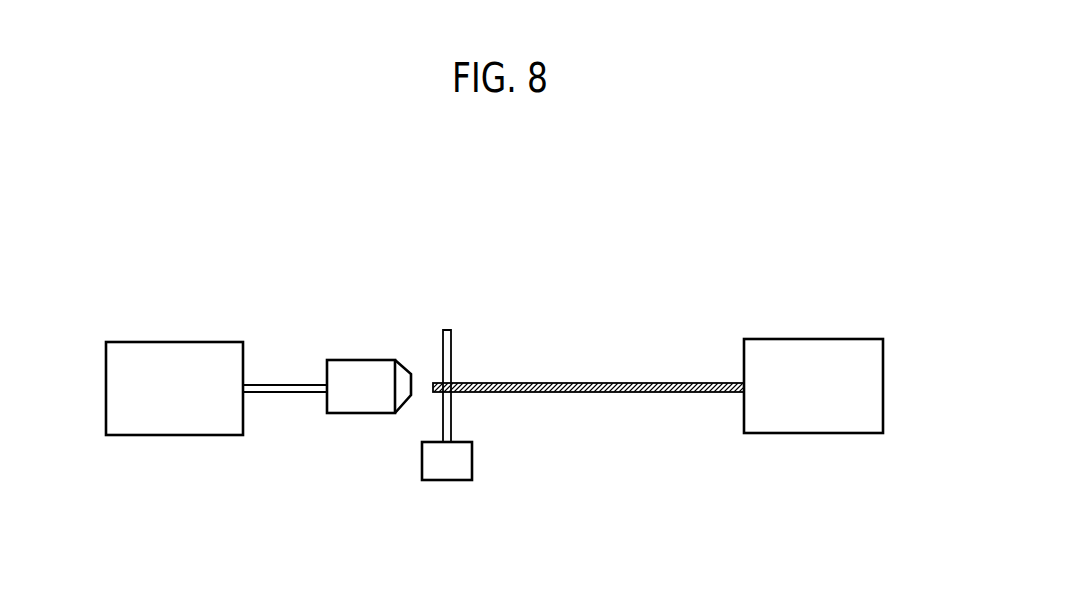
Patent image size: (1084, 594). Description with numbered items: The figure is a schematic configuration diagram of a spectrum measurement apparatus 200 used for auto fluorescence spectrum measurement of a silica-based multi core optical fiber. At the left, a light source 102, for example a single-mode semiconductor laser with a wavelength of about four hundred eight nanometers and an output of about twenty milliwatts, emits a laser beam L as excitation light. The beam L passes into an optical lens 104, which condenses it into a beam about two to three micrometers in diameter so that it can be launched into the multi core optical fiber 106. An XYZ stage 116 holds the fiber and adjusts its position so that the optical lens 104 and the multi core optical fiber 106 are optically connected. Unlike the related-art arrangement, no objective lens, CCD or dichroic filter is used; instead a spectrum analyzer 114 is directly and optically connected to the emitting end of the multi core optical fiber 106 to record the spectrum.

The spectrum measurement apparatus 200 is at (690, 195).
The light source 102 is at (167, 342).
The light beam L is at (287, 393).
The optical lens 104 is at (360, 360).
The XYZ stage 116 is at (453, 409).
The multi core optical fiber 106 is at (598, 382).
The spectrum analyzer 114 is at (815, 339).